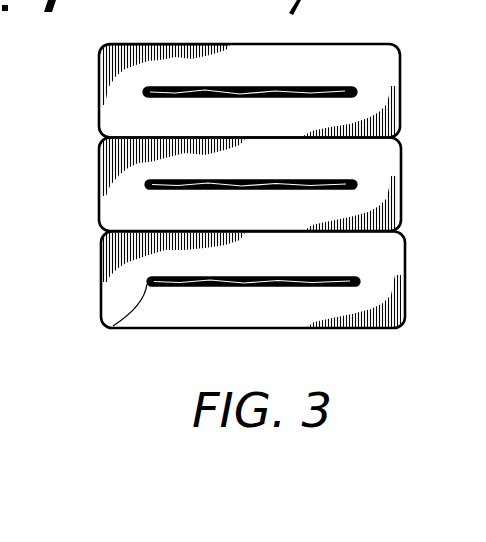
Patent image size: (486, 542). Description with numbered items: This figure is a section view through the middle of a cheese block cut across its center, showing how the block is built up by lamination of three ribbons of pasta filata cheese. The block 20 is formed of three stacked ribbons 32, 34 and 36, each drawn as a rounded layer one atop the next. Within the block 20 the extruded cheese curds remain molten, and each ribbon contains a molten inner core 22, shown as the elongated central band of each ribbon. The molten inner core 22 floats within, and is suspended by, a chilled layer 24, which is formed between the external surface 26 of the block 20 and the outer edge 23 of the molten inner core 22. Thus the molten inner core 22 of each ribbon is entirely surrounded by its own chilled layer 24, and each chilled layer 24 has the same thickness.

The block 20 is at (256, 187).
The molten inner core 22 is at (230, 87).
The outer edge 23 is at (112, 326).
The chilled layer 24 is at (142, 68).
The external surface 26 is at (99, 200).
The ribbon 32 is at (401, 47).
The ribbon 34 is at (401, 192).
The ribbon 36 is at (405, 285).